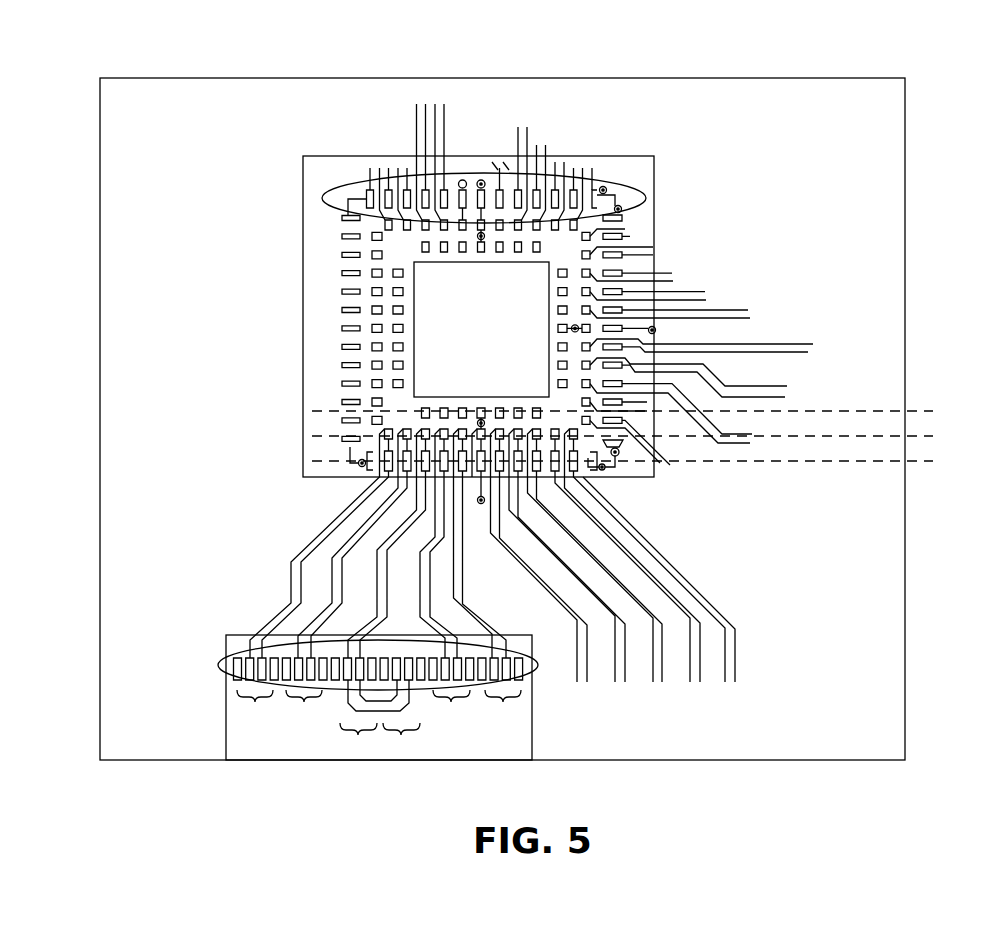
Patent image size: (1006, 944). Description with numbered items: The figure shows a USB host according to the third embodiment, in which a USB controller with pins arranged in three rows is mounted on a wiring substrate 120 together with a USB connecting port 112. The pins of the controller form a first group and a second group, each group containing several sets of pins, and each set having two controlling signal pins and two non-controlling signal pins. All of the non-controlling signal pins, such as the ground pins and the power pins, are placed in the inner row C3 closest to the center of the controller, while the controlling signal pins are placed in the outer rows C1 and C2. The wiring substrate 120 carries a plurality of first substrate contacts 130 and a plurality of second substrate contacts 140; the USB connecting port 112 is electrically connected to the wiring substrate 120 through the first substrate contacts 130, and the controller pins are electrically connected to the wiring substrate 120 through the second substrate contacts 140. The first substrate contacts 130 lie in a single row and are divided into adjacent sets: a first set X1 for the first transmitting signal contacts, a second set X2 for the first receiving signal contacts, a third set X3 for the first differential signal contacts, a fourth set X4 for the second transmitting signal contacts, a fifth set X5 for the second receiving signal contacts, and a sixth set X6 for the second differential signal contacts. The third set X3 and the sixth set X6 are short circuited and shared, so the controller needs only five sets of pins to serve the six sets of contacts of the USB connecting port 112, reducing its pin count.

The wiring substrate 120 is at (909, 270).
The second substrate contacts 140 is at (584, 176).
The first substrate contacts 130 is at (232, 678).
The USB connecting port 112 is at (533, 752).
The outer row C1 is at (644, 465).
The outer row C2 is at (644, 438).
The inner row C3 is at (644, 411).
The first set of substrate contacts X1 is at (255, 711).
The second set of substrate contacts X2 is at (304, 711).
The third set of substrate contacts X3 is at (357, 743).
The fourth set of substrate contacts X4 is at (503, 711).
The fifth set of substrate contacts X5 is at (451, 711).
The sixth set of substrate contacts X6 is at (402, 743).